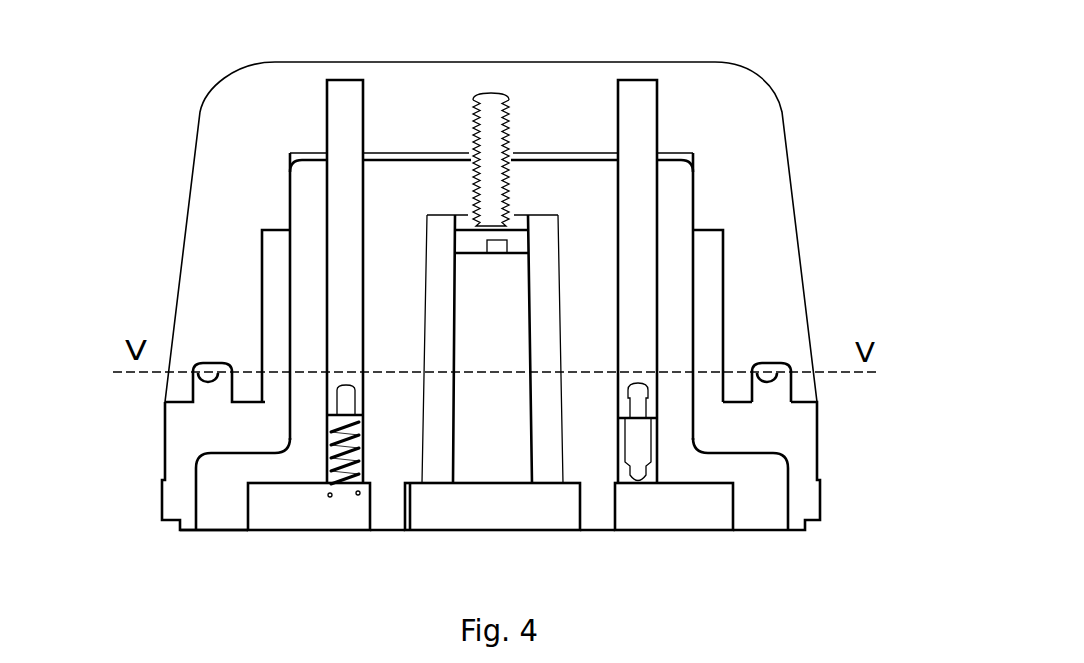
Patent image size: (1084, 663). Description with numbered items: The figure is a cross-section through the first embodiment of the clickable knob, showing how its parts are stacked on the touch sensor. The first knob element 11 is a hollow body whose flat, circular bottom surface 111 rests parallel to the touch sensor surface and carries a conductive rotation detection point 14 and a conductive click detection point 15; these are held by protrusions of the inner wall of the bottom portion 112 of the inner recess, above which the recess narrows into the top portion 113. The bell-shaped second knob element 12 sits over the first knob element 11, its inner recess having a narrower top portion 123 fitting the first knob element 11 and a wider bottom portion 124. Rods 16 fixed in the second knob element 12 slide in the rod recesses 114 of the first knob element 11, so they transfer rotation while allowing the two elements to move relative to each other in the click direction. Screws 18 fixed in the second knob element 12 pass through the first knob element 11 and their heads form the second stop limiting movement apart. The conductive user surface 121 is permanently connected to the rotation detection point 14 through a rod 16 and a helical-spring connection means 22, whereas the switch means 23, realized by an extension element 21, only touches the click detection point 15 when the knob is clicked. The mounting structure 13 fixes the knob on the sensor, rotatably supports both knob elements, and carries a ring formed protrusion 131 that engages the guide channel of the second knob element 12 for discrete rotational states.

The first knob element 11 is at (763, 508).
The bottom surface 111 is at (213, 533).
The bottom portion of the inner recess 112 is at (577, 508).
The top portion of the inner recess 113 is at (423, 430).
The rod recesses 114 is at (657, 438).
The second knob element 12 is at (762, 197).
The user surface 121 is at (787, 122).
The top portion of the inner recess of the second knob element 123 is at (288, 153).
The bottom portion of the inner recess of the second knob element 124 is at (260, 265).
The mounting structure 13 is at (788, 434).
The ring formed protrusion 131 is at (770, 390).
The rotation detection point 14 is at (303, 533).
The click detection point 15 is at (673, 533).
The rods 16 is at (630, 105).
The screw 18 is at (487, 118).
The extension element 21 is at (620, 437).
The connection means 22 is at (365, 463).
The switch means 23 is at (675, 422).